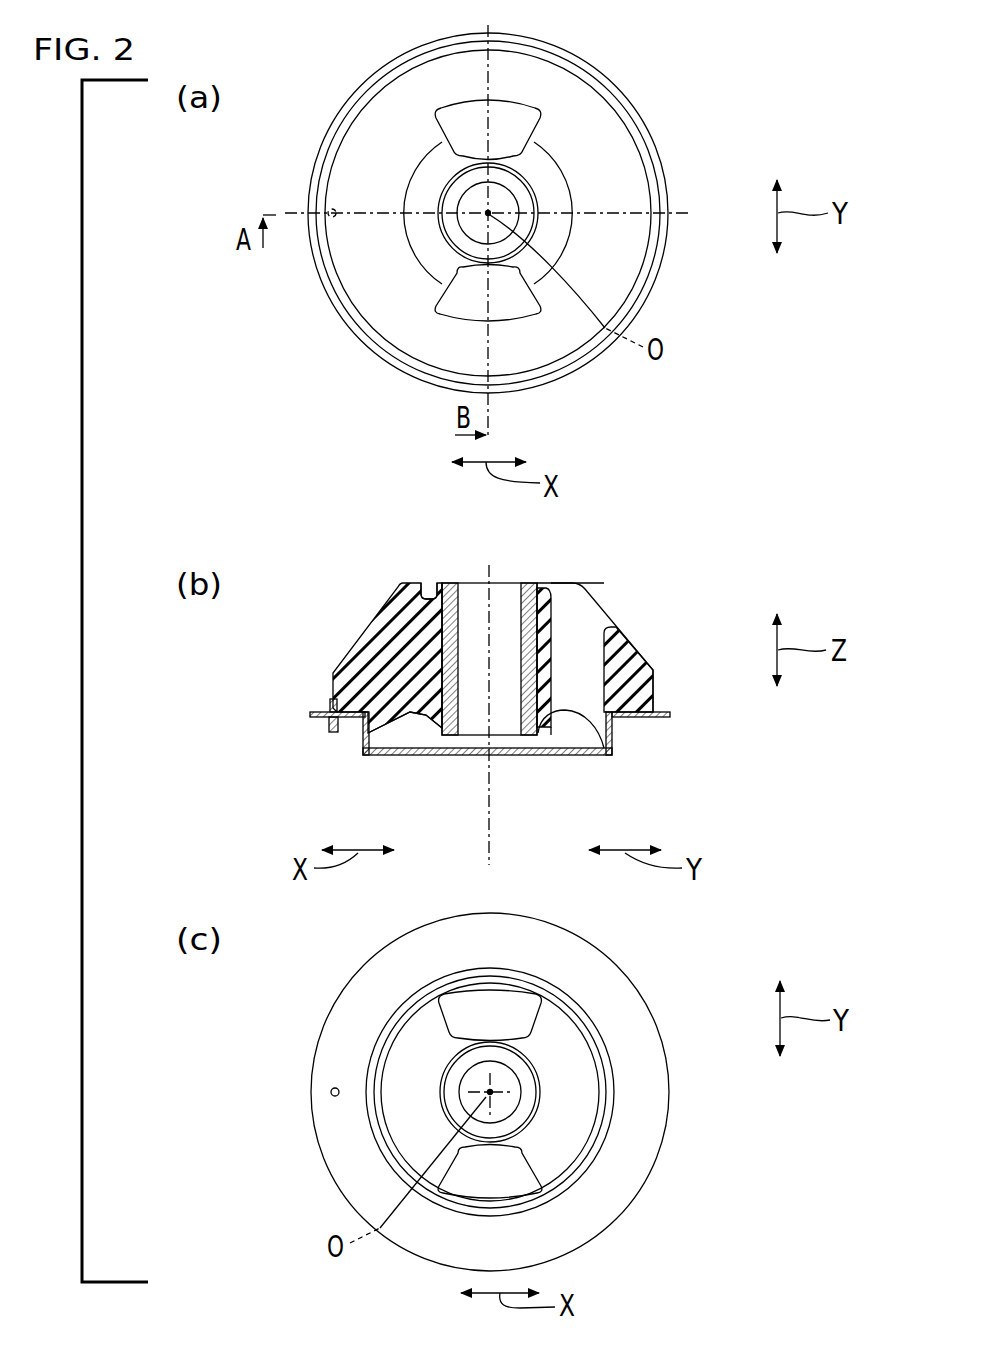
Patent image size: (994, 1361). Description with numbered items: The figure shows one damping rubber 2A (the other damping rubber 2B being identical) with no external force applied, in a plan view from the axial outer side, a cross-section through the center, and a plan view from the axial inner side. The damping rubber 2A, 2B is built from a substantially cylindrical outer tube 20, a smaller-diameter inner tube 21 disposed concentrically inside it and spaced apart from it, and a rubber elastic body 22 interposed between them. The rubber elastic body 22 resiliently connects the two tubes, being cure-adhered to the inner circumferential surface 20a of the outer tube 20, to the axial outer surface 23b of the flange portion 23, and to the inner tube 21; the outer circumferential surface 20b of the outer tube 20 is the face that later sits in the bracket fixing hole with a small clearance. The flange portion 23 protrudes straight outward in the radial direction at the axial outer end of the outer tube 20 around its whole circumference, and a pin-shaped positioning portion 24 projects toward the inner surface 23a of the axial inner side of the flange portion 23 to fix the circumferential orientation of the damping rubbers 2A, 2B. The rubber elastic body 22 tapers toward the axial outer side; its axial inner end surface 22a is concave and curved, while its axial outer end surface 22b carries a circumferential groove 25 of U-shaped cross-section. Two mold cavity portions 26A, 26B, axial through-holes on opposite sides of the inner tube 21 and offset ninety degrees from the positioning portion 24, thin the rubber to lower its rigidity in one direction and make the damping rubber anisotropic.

The damping rubber 2A is at (693, 72).
The damping rubber 2B is at (524, 644).
The outer tube 20 is at (365, 755).
The inner circumferential surface of the outer tube 20a is at (373, 732).
The outer circumferential surface of the outer tube 20b is at (360, 743).
The inner tube 21 is at (525, 192).
The rubber elastic body 22 is at (627, 243).
The end surface of the axial inner side of the rubber elastic body 22a is at (419, 723).
The end surface of the axial outer side of the rubber elastic body 22b is at (427, 183).
The flange portion 23 is at (657, 143).
The inner surface of the axial inner side of the flange portion 23a is at (313, 721).
The axial outer surface of the flange portion 23b is at (332, 700).
The positioning portion 24 is at (332, 218).
The groove 25 is at (435, 262).
The mold cavity portion 26A is at (515, 117).
The mold cavity portion 26B is at (507, 308).